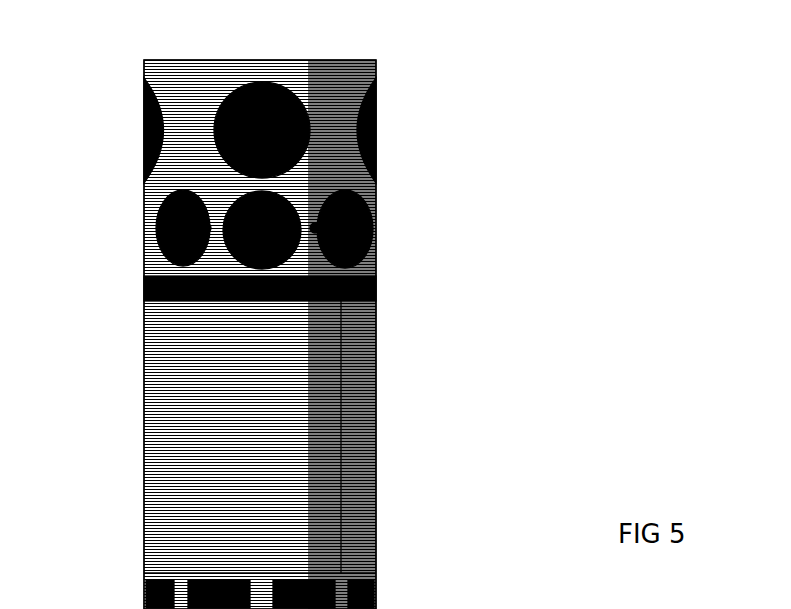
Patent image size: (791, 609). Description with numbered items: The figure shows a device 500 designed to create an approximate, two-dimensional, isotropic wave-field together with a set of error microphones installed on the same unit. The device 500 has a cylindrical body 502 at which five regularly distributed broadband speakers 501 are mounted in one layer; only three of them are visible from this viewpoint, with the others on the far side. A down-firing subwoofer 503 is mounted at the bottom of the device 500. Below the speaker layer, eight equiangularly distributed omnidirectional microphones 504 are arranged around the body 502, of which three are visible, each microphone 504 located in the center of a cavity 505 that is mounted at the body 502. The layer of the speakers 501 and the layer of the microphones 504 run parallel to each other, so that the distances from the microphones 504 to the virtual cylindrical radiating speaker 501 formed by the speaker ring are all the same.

The device 500 is at (116, 475).
The broadband speaker 501 is at (222, 82).
The cylindrical body 502 is at (353, 492).
The down-firing subwoofer 503 is at (368, 565).
The omnidirectional microphone 504 is at (150, 232).
The cavity 505 is at (137, 228).